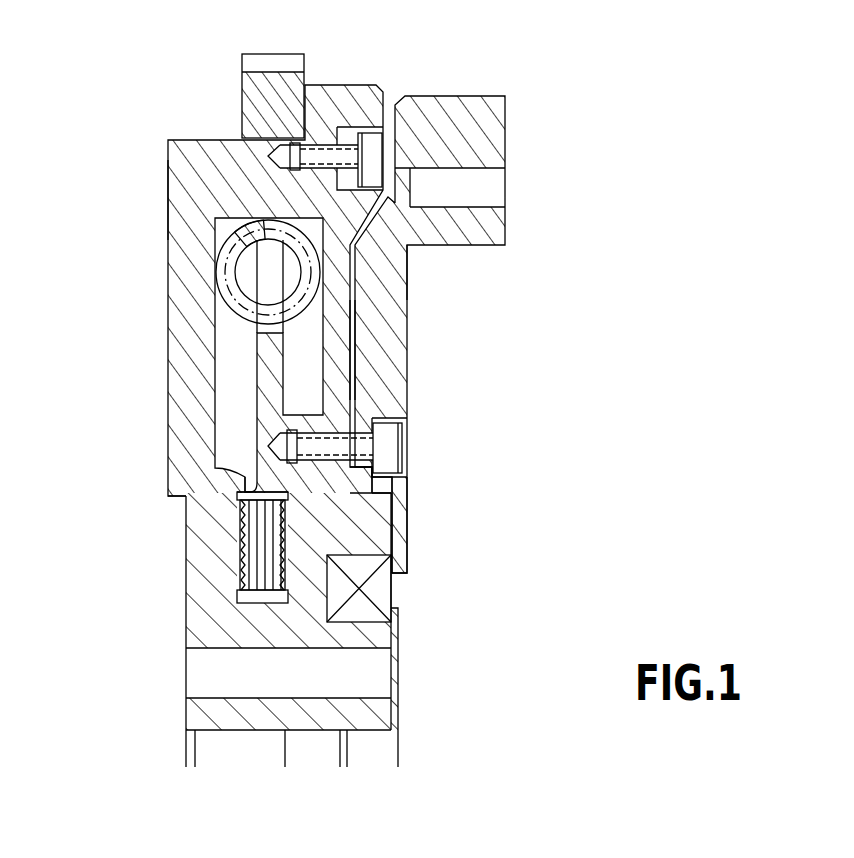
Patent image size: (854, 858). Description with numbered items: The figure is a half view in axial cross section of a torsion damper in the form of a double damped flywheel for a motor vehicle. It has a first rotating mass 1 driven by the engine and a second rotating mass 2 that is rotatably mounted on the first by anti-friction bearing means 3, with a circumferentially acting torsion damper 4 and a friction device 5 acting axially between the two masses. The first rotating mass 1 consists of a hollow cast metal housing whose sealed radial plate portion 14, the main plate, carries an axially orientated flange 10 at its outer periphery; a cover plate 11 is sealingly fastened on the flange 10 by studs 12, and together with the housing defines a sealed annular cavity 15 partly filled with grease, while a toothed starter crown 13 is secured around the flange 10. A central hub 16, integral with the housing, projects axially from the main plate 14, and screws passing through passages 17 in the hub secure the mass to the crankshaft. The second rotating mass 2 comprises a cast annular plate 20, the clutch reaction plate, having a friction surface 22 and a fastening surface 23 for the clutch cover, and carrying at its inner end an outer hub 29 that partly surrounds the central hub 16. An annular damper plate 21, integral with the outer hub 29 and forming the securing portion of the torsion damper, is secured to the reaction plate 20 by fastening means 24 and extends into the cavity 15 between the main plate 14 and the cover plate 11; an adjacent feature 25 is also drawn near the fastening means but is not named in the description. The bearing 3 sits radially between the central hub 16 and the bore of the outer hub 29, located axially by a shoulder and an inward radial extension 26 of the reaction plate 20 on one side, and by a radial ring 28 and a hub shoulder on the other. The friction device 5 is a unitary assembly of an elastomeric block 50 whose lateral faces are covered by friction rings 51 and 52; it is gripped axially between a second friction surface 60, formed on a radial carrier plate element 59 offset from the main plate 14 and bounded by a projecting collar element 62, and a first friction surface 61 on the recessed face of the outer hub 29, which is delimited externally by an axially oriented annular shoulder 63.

The first rotating mass 1 is at (143, 357).
The second rotating mass 2 is at (520, 243).
The anti-friction bearing means 3 is at (392, 590).
The torsion damper 4 is at (222, 290).
The friction device 5 is at (258, 563).
The axially orientated flange 10 is at (192, 140).
The cover plate 11 is at (345, 128).
The studs 12 is at (318, 145).
The toothed starter crown 13 is at (243, 84).
The radial plate portion 14 is at (168, 198).
The sealed annular cavity 15 is at (222, 236).
The central hub 16 is at (174, 732).
The passages 17 is at (357, 700).
The annular plate 20 is at (380, 320).
The damper plate 21 is at (352, 375).
The friction surface 22 is at (407, 280).
The fastening surface 23 is at (507, 120).
The fastening means 24 is at (388, 437).
The recess 25 is at (407, 477).
The inward radial extension 26 is at (408, 550).
The radial ring 28 is at (399, 700).
The outer hub 29 is at (372, 523).
The element of elastic material 50 is at (242, 600).
The friction ring 51 is at (190, 641).
The friction ring 52 is at (290, 600).
The carrier plate element 59 is at (185, 617).
The second friction surface 60 is at (233, 542).
The first friction surface 61 is at (284, 592).
The collar element 62 is at (226, 488).
The annular shoulder 63 is at (237, 500).